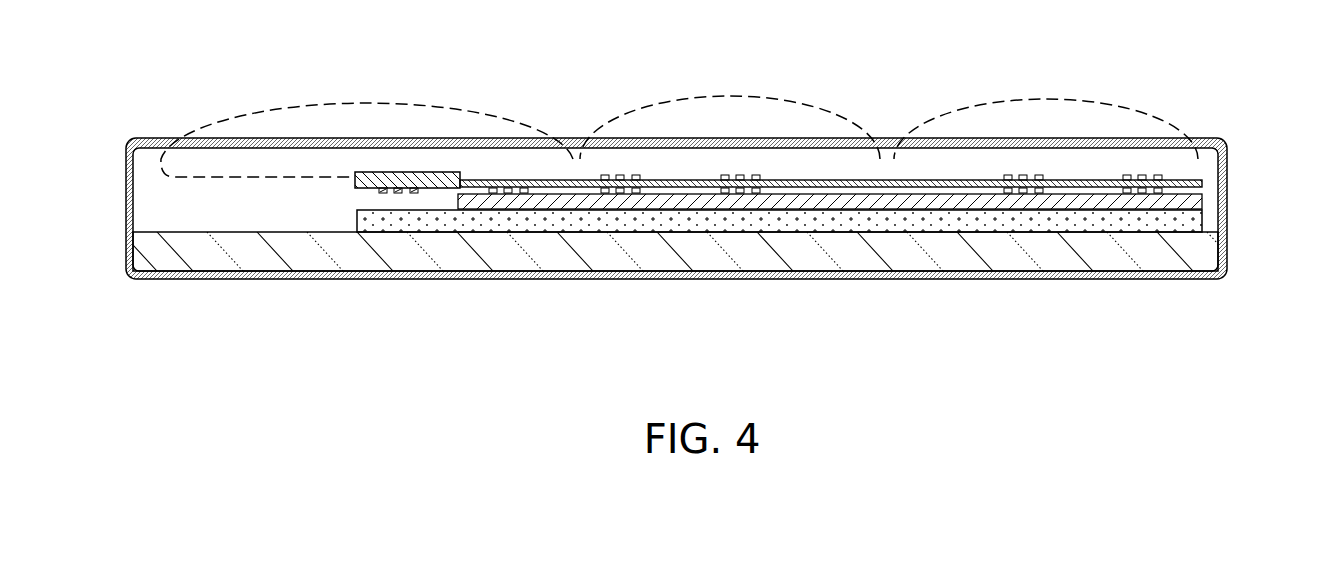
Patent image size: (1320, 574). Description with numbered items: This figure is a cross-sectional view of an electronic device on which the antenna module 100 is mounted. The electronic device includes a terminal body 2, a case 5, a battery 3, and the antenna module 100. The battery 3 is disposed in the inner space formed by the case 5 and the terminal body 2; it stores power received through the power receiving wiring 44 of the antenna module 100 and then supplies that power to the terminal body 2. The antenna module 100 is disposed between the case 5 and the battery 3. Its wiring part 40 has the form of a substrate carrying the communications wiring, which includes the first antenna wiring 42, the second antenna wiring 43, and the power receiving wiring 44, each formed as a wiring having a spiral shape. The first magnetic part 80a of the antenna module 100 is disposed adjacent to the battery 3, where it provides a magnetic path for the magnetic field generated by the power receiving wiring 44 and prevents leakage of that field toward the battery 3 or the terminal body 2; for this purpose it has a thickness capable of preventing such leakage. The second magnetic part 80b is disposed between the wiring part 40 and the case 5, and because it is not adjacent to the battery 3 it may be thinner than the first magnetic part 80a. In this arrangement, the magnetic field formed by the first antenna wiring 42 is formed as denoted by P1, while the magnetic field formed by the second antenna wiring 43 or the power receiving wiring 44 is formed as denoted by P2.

The terminal body 2 is at (703, 256).
The battery 3 is at (545, 232).
The case 5 is at (200, 138).
The wiring part 40 is at (1206, 183).
The first antenna wiring 42 is at (413, 193).
The second antenna wiring 43 is at (1126, 187).
The power receiving wiring 44 is at (1037, 194).
The first magnetic part 80a is at (605, 194).
The second magnetic part 80b is at (367, 190).
The antenna module 100 is at (369, 255).
The magnetic field formed by the first antenna wiring P1 is at (423, 98).
The magnetic field formed by the second antenna wiring or the power receiving wiring P2 is at (947, 113).